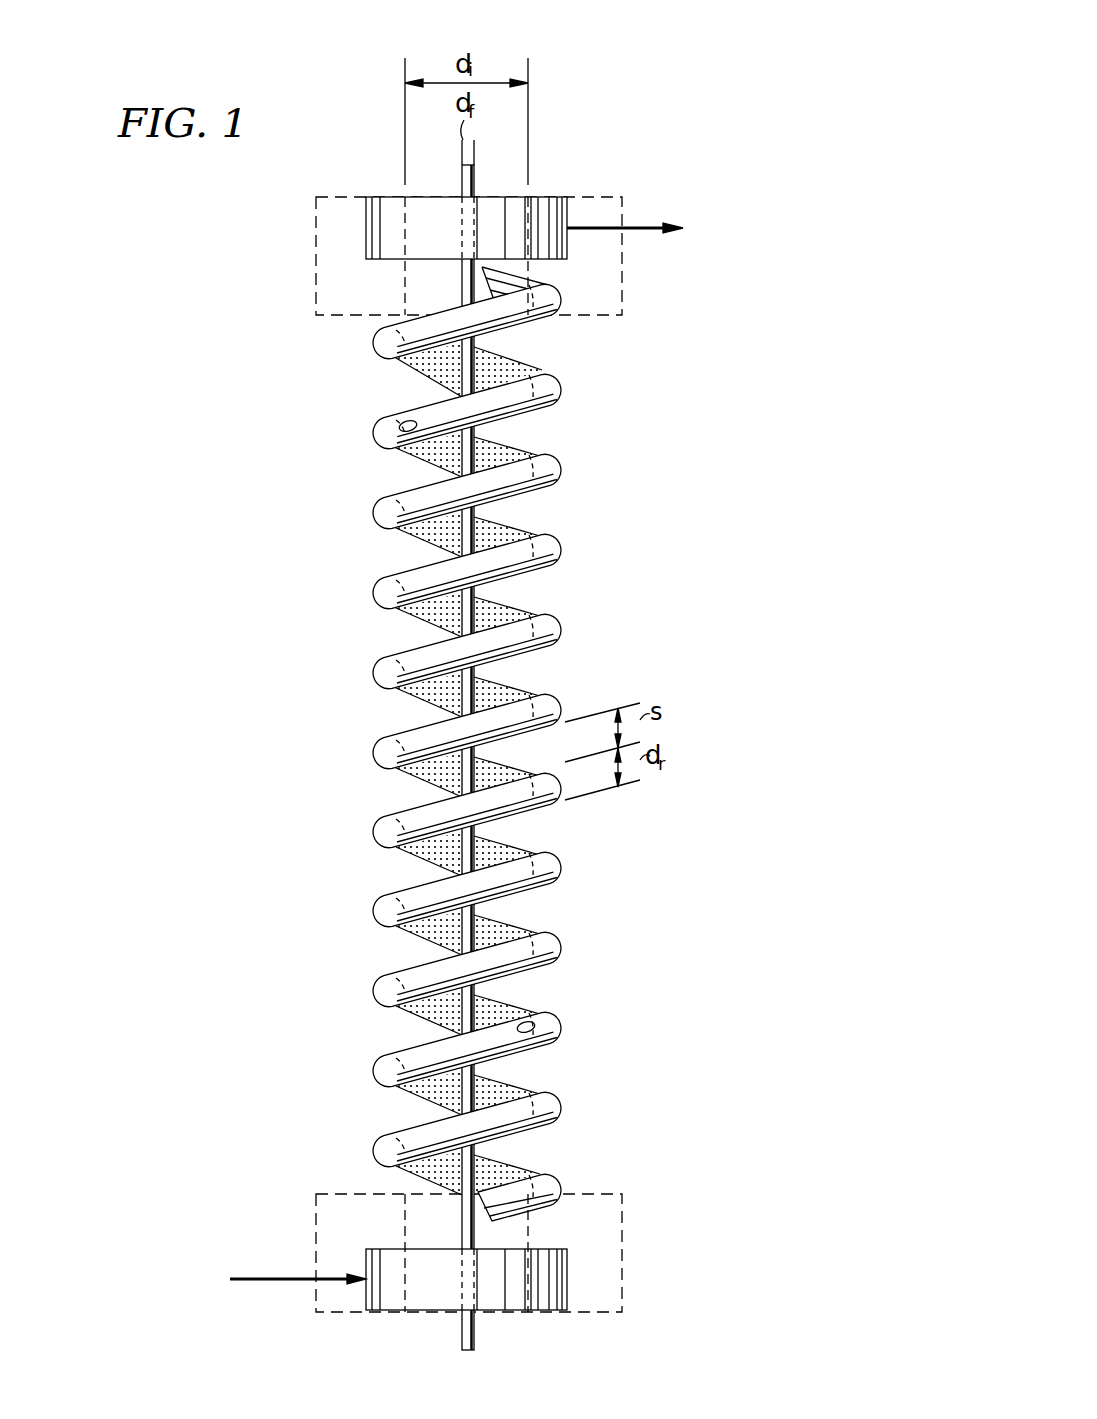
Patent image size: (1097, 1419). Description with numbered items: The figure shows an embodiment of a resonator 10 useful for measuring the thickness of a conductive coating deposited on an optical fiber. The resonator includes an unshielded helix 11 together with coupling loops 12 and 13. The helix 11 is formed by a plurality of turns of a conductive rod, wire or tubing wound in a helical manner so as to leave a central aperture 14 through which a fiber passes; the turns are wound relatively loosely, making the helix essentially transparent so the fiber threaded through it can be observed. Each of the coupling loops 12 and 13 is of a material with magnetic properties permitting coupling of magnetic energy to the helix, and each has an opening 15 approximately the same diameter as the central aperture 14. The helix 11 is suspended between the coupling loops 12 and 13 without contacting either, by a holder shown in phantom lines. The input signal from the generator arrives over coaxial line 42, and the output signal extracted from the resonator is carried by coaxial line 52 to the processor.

The resonator 10 is at (352, 573).
The helix 11 is at (570, 541).
The coupling loop 12 is at (497, 200).
The coupling loop 13 is at (516, 1300).
The central aperture 14 is at (378, 434).
The opening 15 is at (406, 218).
The coaxial line 42 is at (290, 1283).
The coaxial line 52 is at (638, 222).